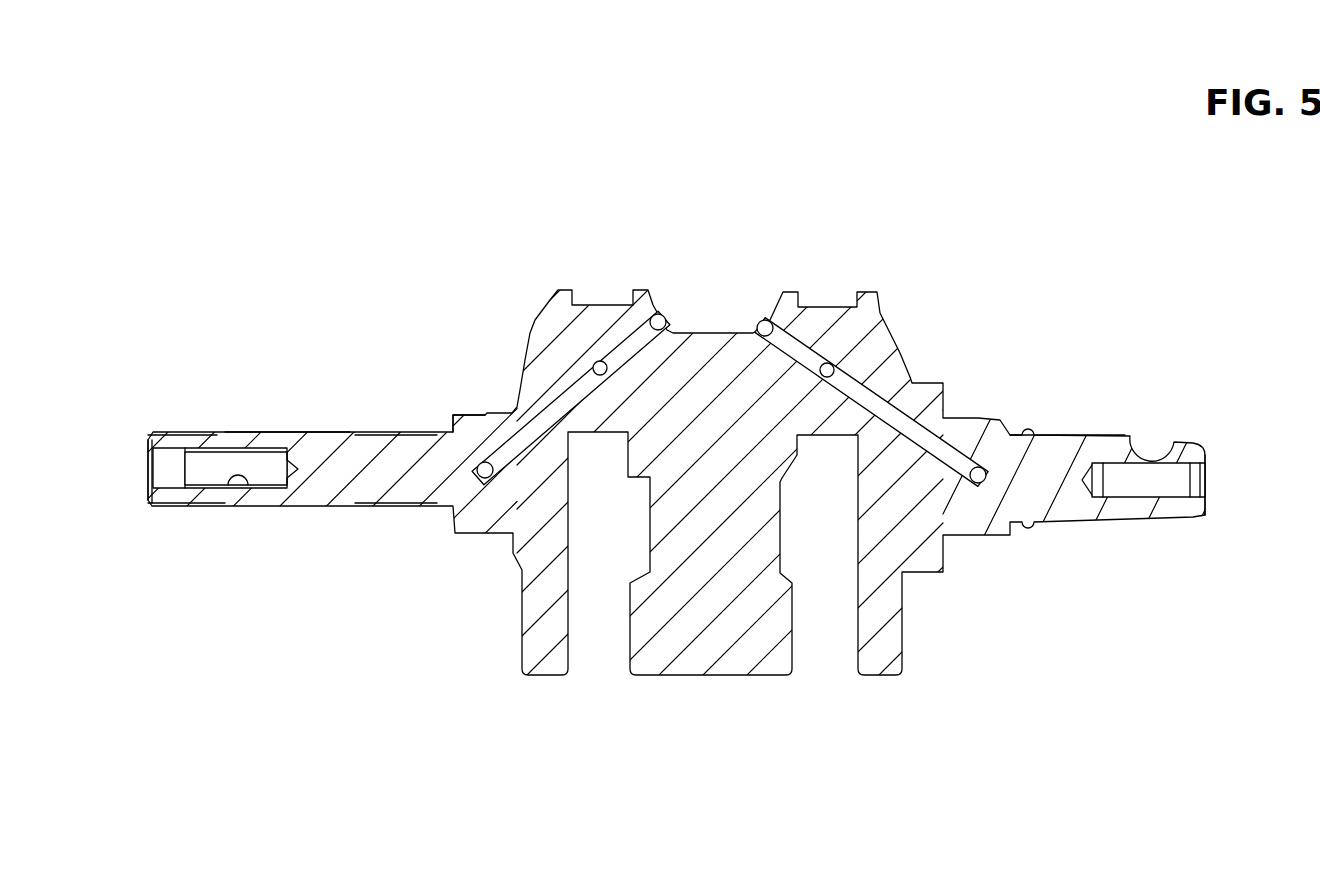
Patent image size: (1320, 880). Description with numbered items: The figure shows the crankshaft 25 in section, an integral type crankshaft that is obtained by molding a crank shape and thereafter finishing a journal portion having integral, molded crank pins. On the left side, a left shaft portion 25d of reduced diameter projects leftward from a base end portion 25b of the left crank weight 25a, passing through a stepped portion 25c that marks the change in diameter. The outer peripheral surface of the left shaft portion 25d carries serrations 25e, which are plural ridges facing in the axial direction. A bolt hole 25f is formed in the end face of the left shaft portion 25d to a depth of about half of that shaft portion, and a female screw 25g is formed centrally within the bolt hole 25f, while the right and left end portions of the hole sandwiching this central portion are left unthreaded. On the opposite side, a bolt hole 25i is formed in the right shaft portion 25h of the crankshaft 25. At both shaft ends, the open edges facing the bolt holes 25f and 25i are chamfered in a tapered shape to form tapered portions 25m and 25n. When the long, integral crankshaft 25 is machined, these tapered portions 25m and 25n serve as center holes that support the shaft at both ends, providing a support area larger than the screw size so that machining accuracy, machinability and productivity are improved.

The crankshaft 25 is at (724, 244).
The left crank weight 25a is at (540, 680).
The base end portion 25b is at (475, 403).
The stepped portion 25c is at (455, 414).
The left shaft portion 25d is at (300, 425).
The serrations 25e is at (193, 414).
The bolt hole 25f is at (173, 473).
The female screw 25g is at (264, 514).
The tapered portion 25m is at (147, 488).
The right shaft portion 25h is at (1095, 435).
The bolt hole 25i is at (1167, 482).
The tapered portion 25n is at (1208, 500).